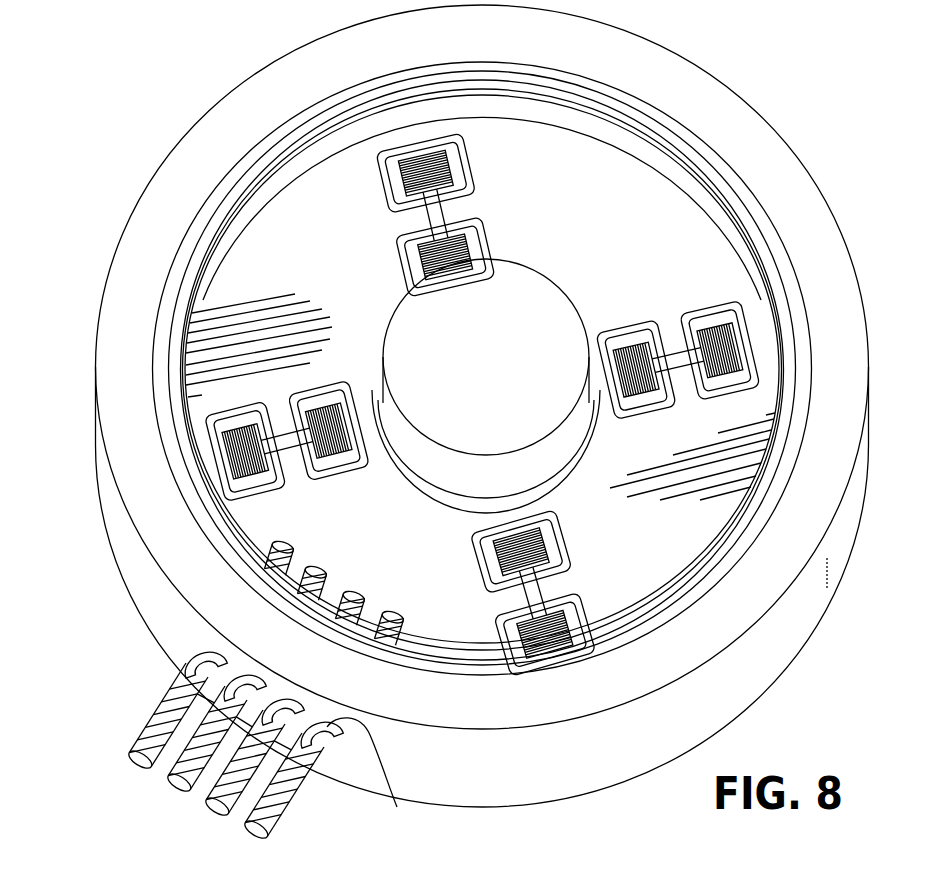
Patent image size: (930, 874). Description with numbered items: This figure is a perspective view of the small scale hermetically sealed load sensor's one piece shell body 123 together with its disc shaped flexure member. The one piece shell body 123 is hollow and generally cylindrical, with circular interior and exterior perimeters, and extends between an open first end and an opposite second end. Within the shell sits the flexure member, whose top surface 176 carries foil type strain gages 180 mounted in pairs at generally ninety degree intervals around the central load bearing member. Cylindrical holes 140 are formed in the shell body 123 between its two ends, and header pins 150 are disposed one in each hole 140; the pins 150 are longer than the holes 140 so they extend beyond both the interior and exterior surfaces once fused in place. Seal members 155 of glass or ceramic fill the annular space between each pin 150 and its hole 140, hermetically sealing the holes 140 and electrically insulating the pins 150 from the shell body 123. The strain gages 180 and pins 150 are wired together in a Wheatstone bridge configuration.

The one piece shell body 123 is at (322, 154).
The top surface 176 is at (603, 233).
The foil type strain gages 180 is at (450, 170).
The cylindrical holes 140 is at (200, 648).
The header pins 150 is at (160, 723).
The seal members 155 is at (187, 665).